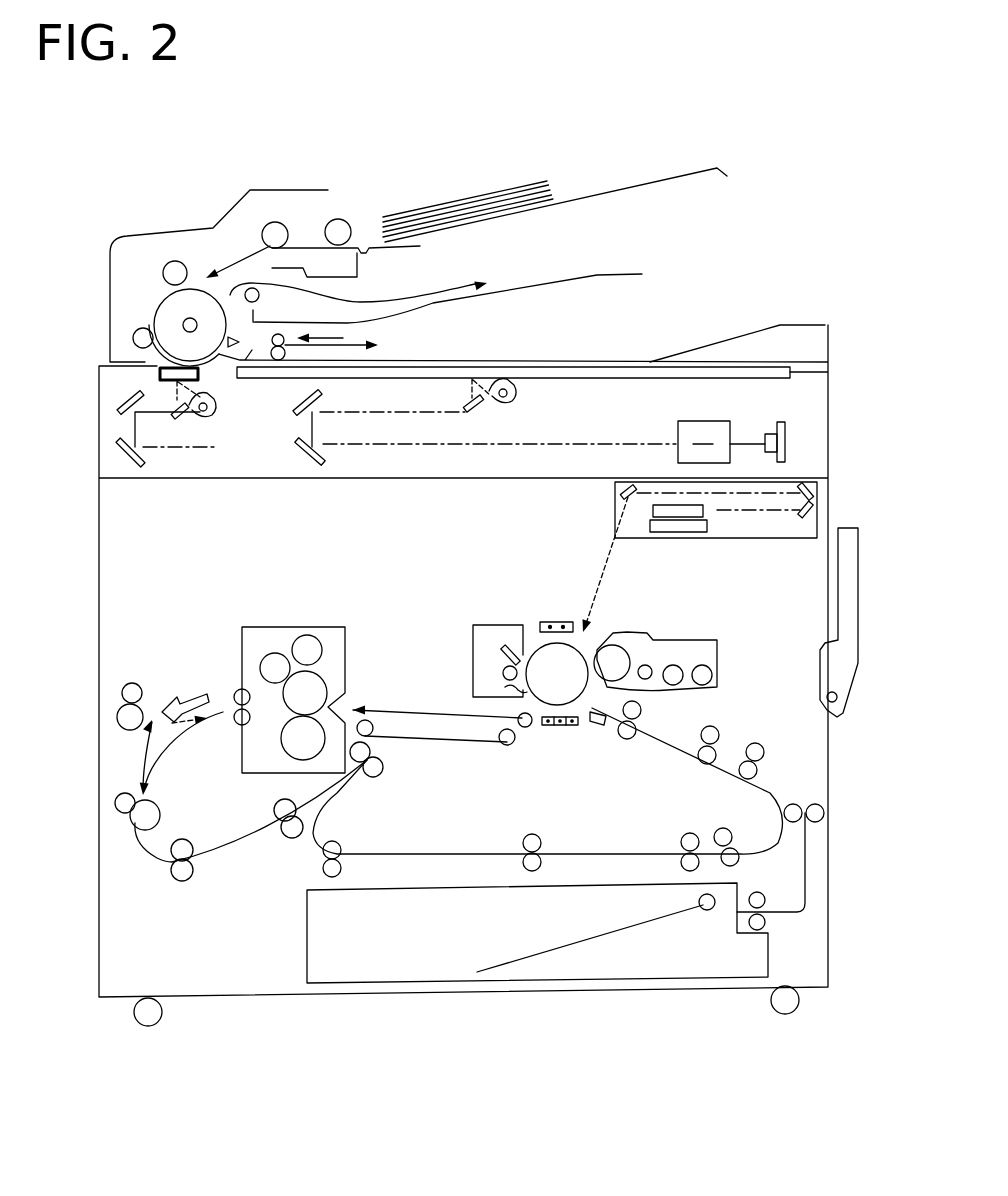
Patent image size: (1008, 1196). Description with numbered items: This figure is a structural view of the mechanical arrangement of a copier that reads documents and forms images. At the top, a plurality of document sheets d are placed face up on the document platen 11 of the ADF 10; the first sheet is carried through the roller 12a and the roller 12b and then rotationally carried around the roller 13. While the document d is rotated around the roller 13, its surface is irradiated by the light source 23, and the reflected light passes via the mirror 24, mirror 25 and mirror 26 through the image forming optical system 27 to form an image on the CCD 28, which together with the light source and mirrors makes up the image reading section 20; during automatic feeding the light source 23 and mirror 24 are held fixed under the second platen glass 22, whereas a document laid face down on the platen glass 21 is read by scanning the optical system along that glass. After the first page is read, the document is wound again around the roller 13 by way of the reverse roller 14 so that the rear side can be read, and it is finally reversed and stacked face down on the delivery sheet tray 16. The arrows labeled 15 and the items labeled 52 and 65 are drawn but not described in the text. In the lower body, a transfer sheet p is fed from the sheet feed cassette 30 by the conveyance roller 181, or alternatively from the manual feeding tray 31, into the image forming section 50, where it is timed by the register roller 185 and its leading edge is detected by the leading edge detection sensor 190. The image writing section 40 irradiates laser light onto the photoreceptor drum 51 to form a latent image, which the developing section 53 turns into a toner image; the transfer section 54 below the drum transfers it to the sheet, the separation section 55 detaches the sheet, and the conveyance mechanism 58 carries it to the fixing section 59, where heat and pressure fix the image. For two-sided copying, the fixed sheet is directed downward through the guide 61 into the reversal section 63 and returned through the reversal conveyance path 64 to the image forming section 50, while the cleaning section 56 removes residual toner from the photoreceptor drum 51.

The ADF 10 is at (670, 228).
The document platen 11 is at (540, 210).
The roller 12a is at (338, 219).
The roller 12b is at (272, 221).
The roller 13 is at (155, 307).
The reverse roller 14 is at (280, 334).
The document reversing path 15 is at (363, 357).
The delivery sheet tray 16 is at (589, 273).
The document d is at (450, 203).
The image reading section 20 is at (675, 383).
The platen glass 21 is at (552, 377).
The second platen glass 22 is at (157, 372).
The light source 23 is at (513, 391).
The mirror 24 is at (480, 412).
The mirror 25 is at (303, 413).
The mirror 26 is at (303, 457).
The image forming optical system 27 is at (733, 427).
The CCD 28 is at (785, 442).
The sheet feed cassette 30 is at (400, 957).
The manual feeding tray 31 is at (847, 527).
The image writing section 40 is at (606, 509).
The image forming section 50 is at (413, 572).
The photoreceptor drum 51 is at (583, 642).
The charger 52 is at (540, 620).
The developing section 53 is at (657, 632).
The transfer section 54 is at (570, 727).
The separation section 55 is at (540, 727).
The cleaning section 56 is at (473, 648).
The conveyance mechanism 58 is at (467, 747).
The fixing section 59 is at (347, 645).
The guide 61 is at (190, 693).
The reversal section 63 is at (220, 815).
The reversal conveyance path 64 is at (363, 838).
The discharge rollers 65 is at (380, 773).
The conveyance roller 181 is at (698, 902).
The register roller 185 is at (635, 739).
The leading edge detection sensor 190 is at (598, 726).
The transfer sheet p is at (543, 952).